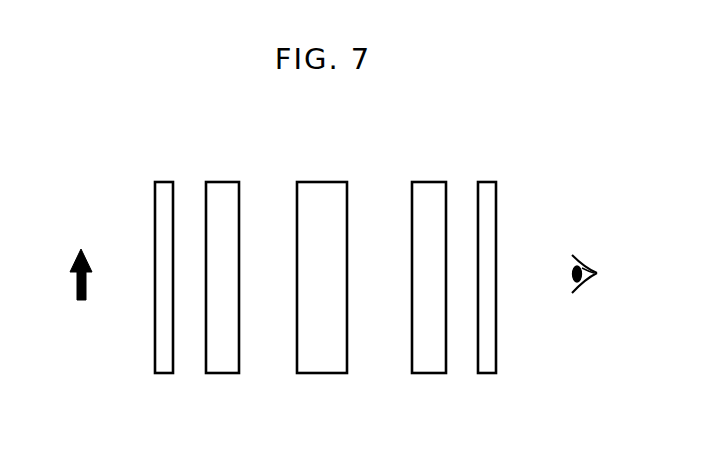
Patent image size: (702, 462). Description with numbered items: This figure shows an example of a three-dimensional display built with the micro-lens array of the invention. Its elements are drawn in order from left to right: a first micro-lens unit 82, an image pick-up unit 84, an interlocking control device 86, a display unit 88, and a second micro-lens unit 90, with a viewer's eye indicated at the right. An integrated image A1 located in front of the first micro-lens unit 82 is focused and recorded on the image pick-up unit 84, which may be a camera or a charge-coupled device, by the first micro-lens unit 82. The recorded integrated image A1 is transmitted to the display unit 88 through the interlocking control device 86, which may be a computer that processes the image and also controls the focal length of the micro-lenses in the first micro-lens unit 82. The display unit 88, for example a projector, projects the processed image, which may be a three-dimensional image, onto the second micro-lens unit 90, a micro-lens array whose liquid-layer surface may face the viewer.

The first micro-lens unit 82 is at (164, 183).
The image pick-up unit 84 is at (223, 183).
The interlocking control device 86 is at (323, 183).
The display unit 88 is at (429, 183).
The second micro-lens unit 90 is at (488, 183).
The integrated image A1 is at (77, 281).